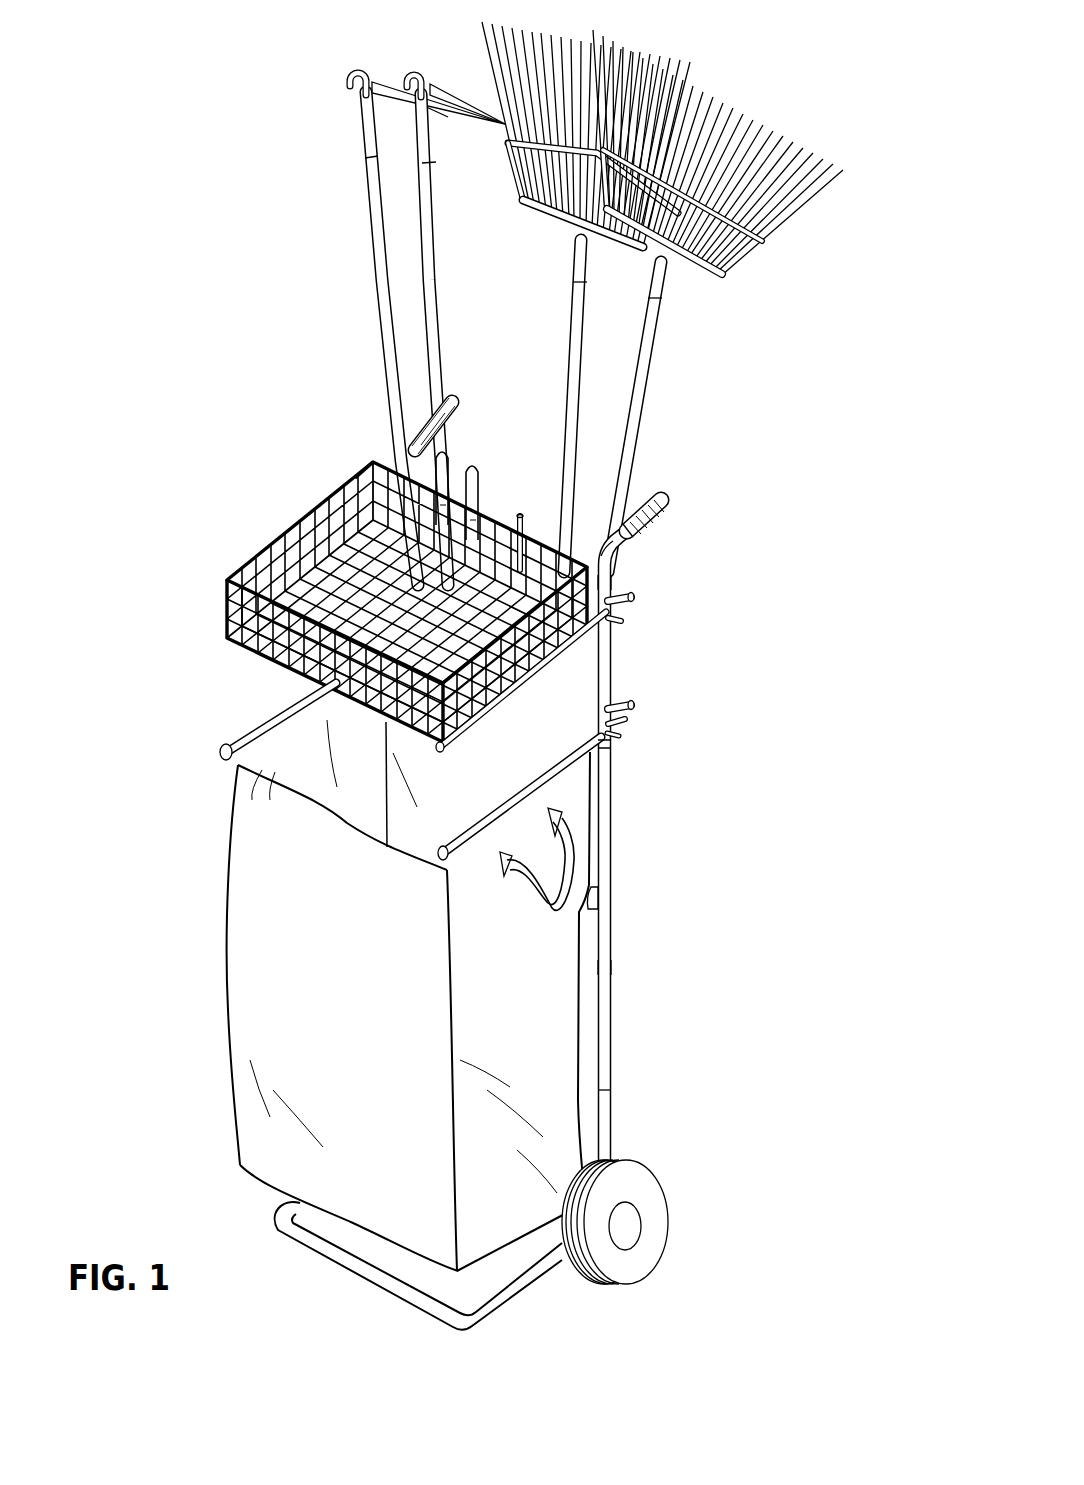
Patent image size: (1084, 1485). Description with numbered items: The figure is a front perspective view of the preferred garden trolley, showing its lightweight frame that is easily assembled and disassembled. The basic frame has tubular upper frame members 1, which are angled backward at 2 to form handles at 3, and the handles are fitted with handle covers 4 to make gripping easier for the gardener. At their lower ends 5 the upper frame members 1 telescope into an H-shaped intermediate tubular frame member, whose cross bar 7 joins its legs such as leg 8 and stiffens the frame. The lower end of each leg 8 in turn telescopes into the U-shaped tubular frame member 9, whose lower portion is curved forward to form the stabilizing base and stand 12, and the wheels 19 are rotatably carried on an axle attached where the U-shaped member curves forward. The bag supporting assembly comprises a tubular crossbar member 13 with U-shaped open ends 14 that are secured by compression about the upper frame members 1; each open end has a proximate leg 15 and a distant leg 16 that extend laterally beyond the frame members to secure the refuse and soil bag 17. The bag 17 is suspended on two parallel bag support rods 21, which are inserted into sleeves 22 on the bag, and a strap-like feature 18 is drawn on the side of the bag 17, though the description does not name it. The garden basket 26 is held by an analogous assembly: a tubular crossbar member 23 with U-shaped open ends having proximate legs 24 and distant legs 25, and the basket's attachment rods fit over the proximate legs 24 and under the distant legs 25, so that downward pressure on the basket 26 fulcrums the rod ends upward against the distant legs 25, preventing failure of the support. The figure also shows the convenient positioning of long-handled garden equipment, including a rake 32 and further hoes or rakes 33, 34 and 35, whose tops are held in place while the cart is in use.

The tubular upper frame member 1 is at (607, 667).
The backward angle of upper frame member 2 is at (395, 460).
The handle 3 is at (614, 560).
The handle cover 4 is at (661, 500).
The lower end of upper frame member 5 is at (612, 743).
The cross bar 7 is at (594, 907).
The leg of intermediate frame member 8 is at (605, 963).
The U-shaped tubular frame member 9 is at (605, 1117).
The stabilizing base 12 is at (504, 1303).
The tubular crossbar member 13 is at (605, 743).
The U-shaped end 14 is at (625, 700).
The proximate leg 15 is at (629, 722).
The distant leg 16 is at (618, 735).
The refuse and soil bag 17 is at (228, 850).
The strap handle 18 is at (534, 907).
The wheel 19 is at (667, 1180).
The bag support rod 21 is at (222, 744).
The sleeve 22 is at (282, 702).
The tubular crossbar member 23 is at (485, 525).
The proximate leg 24 is at (620, 625).
The distant leg 25 is at (633, 590).
The garden basket 26 is at (407, 597).
The rake 32 is at (350, 95).
The long handle garden tool 33 is at (420, 72).
The long handle garden tool 34 is at (542, 213).
The long handle garden tool 35 is at (762, 242).